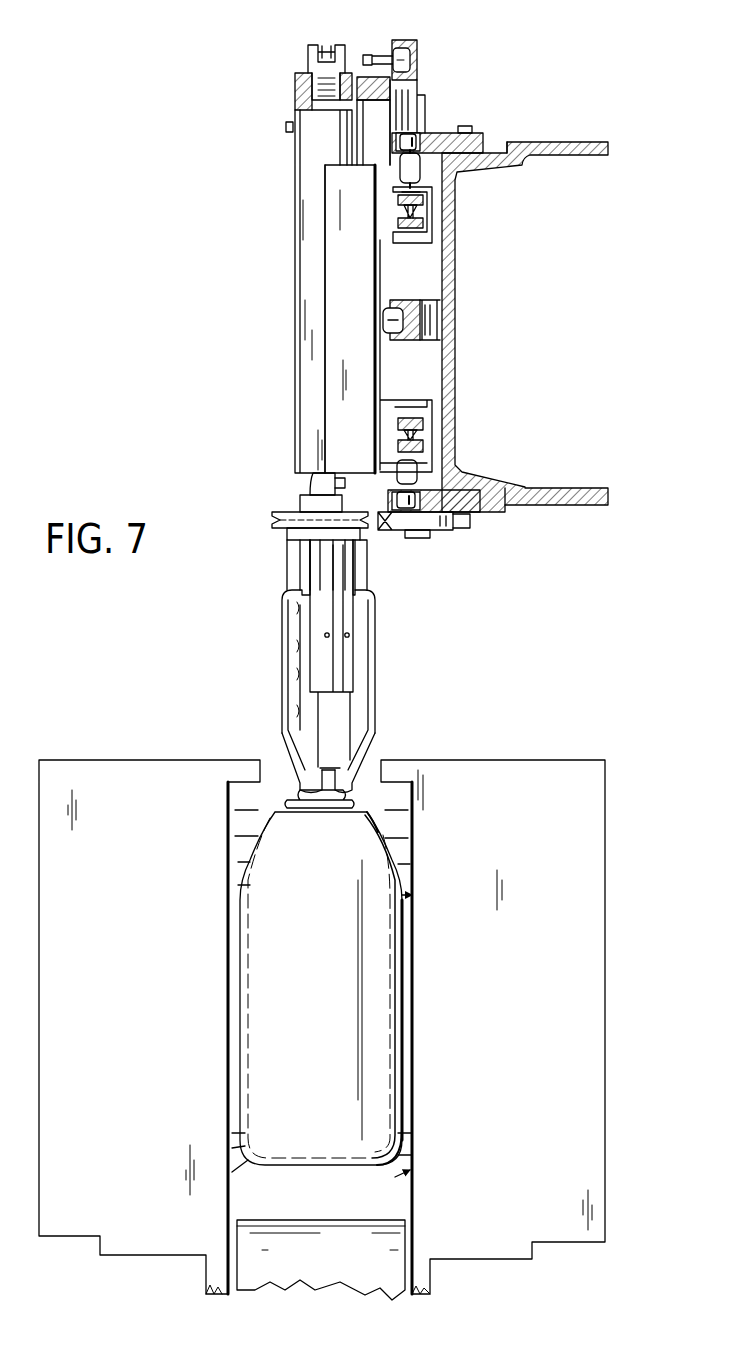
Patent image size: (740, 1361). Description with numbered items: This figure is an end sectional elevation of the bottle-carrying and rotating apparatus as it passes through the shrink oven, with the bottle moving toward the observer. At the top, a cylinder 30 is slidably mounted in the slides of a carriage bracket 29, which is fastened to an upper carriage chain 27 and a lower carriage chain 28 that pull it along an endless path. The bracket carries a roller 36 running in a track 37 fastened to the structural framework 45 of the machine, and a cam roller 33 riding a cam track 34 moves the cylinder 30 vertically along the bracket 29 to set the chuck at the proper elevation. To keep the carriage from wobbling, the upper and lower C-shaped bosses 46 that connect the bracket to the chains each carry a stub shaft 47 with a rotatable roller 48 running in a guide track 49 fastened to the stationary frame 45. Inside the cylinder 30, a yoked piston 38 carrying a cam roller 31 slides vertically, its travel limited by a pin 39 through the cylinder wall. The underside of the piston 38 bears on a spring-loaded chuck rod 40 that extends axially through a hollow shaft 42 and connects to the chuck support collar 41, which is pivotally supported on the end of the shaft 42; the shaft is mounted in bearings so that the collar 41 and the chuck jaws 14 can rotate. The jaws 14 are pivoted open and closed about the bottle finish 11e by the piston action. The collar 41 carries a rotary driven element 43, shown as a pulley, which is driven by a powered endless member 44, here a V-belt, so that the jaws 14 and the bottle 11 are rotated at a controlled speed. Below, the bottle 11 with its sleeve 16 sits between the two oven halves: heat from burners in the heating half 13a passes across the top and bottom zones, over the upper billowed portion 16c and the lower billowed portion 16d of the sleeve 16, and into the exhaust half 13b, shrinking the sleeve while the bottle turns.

The bottle 11 is at (333, 980).
The bottle finish 11e is at (326, 768).
The heating half of the heating apparatus 13a is at (156, 1026).
The exhaust half of the oven 13b is at (527, 1026).
The chuck jaws 14 is at (370, 708).
The sleeve 16 is at (405, 948).
The upper billowed portion of the sleeve 16c is at (372, 822).
The lower billowed portion of the sleeve 16d is at (400, 1140).
The upper carriage chain 27 is at (425, 202).
The lower carriage chain 28 is at (425, 420).
The carriage bracket 29 is at (355, 264).
The cylinder 30 is at (297, 193).
The cam roller 31 is at (325, 47).
The cam roller 33 is at (397, 53).
The cam track 34 is at (417, 60).
The roller 36 is at (420, 325).
The track 37 is at (430, 303).
The yoked piston 38 is at (307, 67).
The pin 39 is at (286, 128).
The chuck rod 40 is at (300, 498).
The chuck support collar 41 is at (340, 513).
The hollow shaft 42 is at (310, 487).
The rotary driven element 43 is at (272, 516).
The powered endless member 44 is at (378, 528).
The structural framework 45 is at (542, 145).
The C-shaped boss 46 is at (432, 238).
The stub shaft 47 is at (403, 167).
The rotatable roller 48 is at (420, 136).
The guide track 49 is at (413, 132).